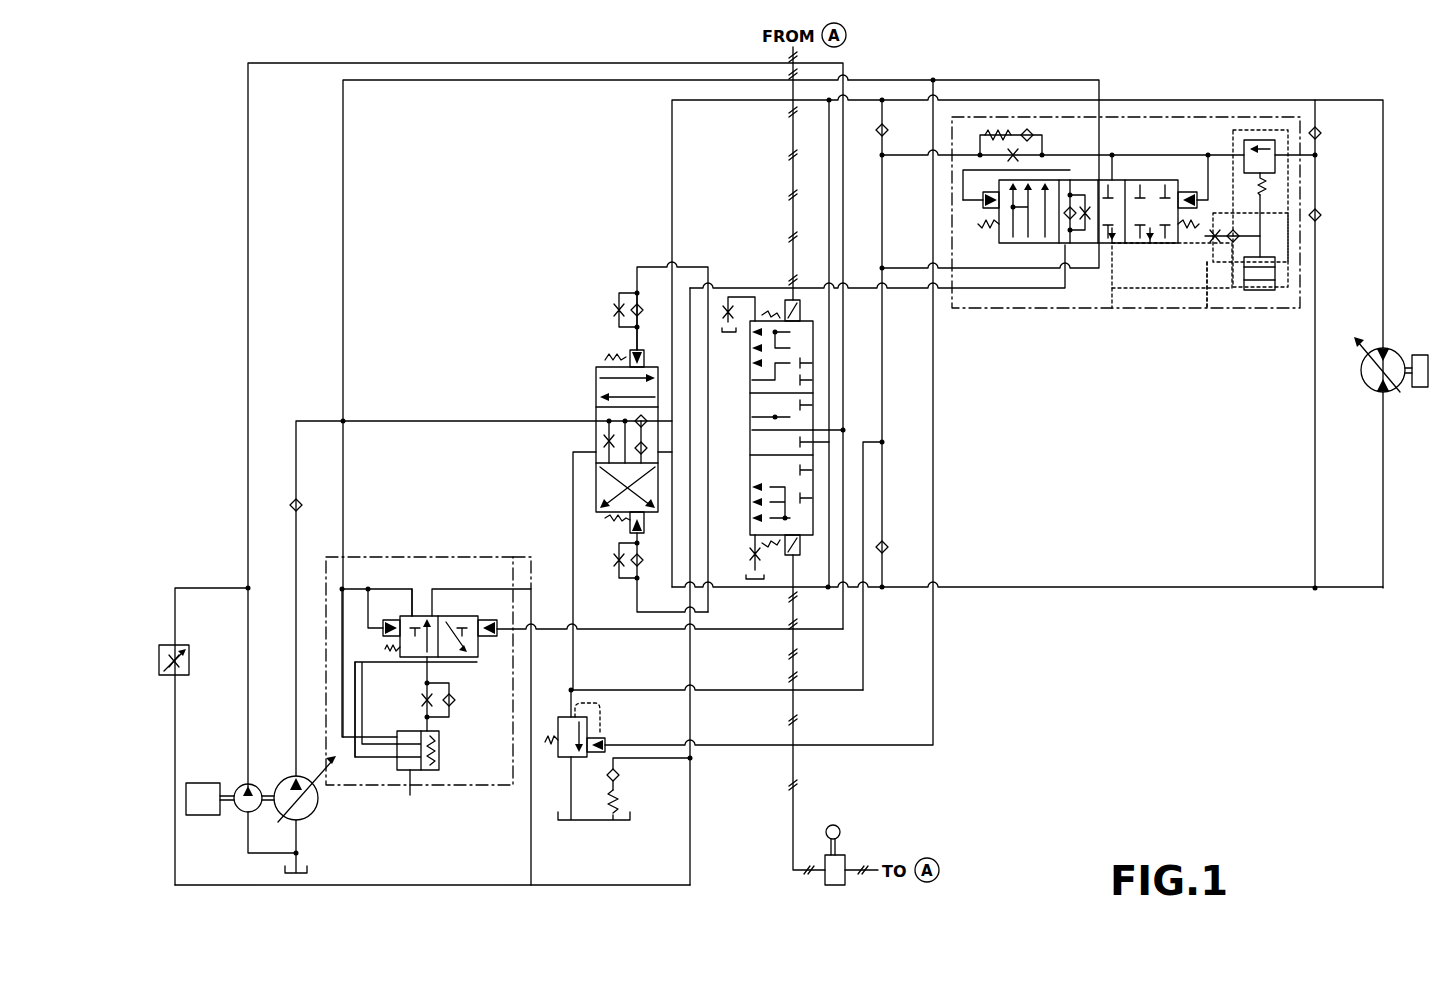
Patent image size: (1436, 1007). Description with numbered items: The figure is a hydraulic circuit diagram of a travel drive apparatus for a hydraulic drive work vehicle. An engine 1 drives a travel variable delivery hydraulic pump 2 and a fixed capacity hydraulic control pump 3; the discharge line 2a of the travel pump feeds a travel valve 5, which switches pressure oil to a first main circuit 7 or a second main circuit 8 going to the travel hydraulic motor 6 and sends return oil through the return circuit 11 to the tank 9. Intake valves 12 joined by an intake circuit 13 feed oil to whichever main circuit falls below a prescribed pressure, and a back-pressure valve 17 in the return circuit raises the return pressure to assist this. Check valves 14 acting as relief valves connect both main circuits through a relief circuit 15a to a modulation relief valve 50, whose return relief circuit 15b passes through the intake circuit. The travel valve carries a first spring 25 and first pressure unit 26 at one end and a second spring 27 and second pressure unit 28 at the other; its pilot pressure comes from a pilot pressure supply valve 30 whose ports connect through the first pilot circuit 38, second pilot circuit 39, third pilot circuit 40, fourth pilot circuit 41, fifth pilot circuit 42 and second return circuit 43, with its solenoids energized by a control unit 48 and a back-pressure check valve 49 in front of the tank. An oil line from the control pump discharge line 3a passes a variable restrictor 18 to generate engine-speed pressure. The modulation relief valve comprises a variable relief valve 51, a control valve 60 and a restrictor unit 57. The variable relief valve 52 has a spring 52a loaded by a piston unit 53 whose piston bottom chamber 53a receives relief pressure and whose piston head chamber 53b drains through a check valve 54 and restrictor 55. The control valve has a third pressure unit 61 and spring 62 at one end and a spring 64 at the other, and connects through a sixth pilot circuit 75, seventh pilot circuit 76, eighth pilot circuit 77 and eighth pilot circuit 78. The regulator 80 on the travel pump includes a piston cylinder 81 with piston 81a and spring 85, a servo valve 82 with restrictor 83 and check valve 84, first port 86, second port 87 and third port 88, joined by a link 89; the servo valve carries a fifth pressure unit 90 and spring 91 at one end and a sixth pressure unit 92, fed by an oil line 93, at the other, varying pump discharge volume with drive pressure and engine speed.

The engine 1 is at (203, 815).
The travel variable delivery hydraulic pump 2 is at (310, 818).
The discharge line 2a is at (296, 778).
The hydraulic control pump 3 is at (244, 786).
The discharge line 3a is at (248, 710).
The travel valve 5 is at (596, 375).
The travel hydraulic motor 6 is at (1398, 355).
The first main circuit 7 is at (1157, 100).
The second main circuit 8 is at (1130, 588).
The tank 9 is at (598, 820).
The return circuit 11 is at (573, 650).
The intake valve 12 is at (888, 130).
The intake circuit 13 is at (863, 500).
The check valve 14 is at (1322, 130).
The relief circuit 15a is at (1316, 156).
The return relief circuit 15b is at (1155, 157).
The back-pressure valve 17 is at (558, 750).
The variable restrictor 18 is at (177, 645).
The first spring 25 is at (612, 358).
The first pressure unit 26 is at (635, 350).
The second spring 27 is at (605, 520).
The second pressure unit 28 is at (630, 530).
The pilot pressure supply valve 30 is at (813, 335).
The first pilot circuit 38 is at (829, 170).
The second pilot circuit 39 is at (695, 267).
The third pilot circuit 40 is at (829, 562).
The fourth pilot circuit 41 is at (652, 612).
The fifth pilot circuit 42 is at (968, 290).
The second return circuit 43 is at (690, 660).
The control unit 48 is at (842, 855).
The back-pressure check valve 49 is at (620, 775).
The modulation relief valve 50 is at (1055, 308).
The variable relief valve 51 is at (1238, 135).
The variable relief valve 52 is at (1270, 140).
The spring 52a is at (1280, 180).
The piston unit 53 is at (1258, 292).
The piston bottom chamber 53a is at (1265, 290).
The piston head chamber 53b is at (1276, 268).
The check valve 54 is at (1242, 236).
The restrictor 55 is at (1215, 242).
The restrictor unit 57 is at (1000, 130).
The control valve 60 is at (1130, 245).
The third pressure unit 61 is at (975, 196).
The spring 62 is at (990, 232).
The spring 64 is at (1180, 240).
The sixth pilot circuit 75 is at (1000, 268).
The seventh pilot circuit 76 is at (343, 336).
The eighth pilot circuit 77 is at (1207, 262).
The eighth pilot circuit 78 is at (1211, 157).
The regulator 80 is at (483, 785).
The piston cylinder 81 is at (439, 758).
The piston 81a is at (410, 795).
The servo valve 82 is at (445, 616).
The restrictor 83 is at (424, 700).
The check valve 84 is at (452, 697).
The spring 85 is at (436, 745).
The first port 86 is at (402, 605).
The second port 87 is at (427, 616).
The third port 88 is at (427, 665).
The link 89 is at (355, 682).
The fifth pressure unit 90 is at (387, 618).
The spring 91 is at (392, 648).
The sixth pressure unit 92 is at (493, 620).
The oil line 93 is at (803, 632).